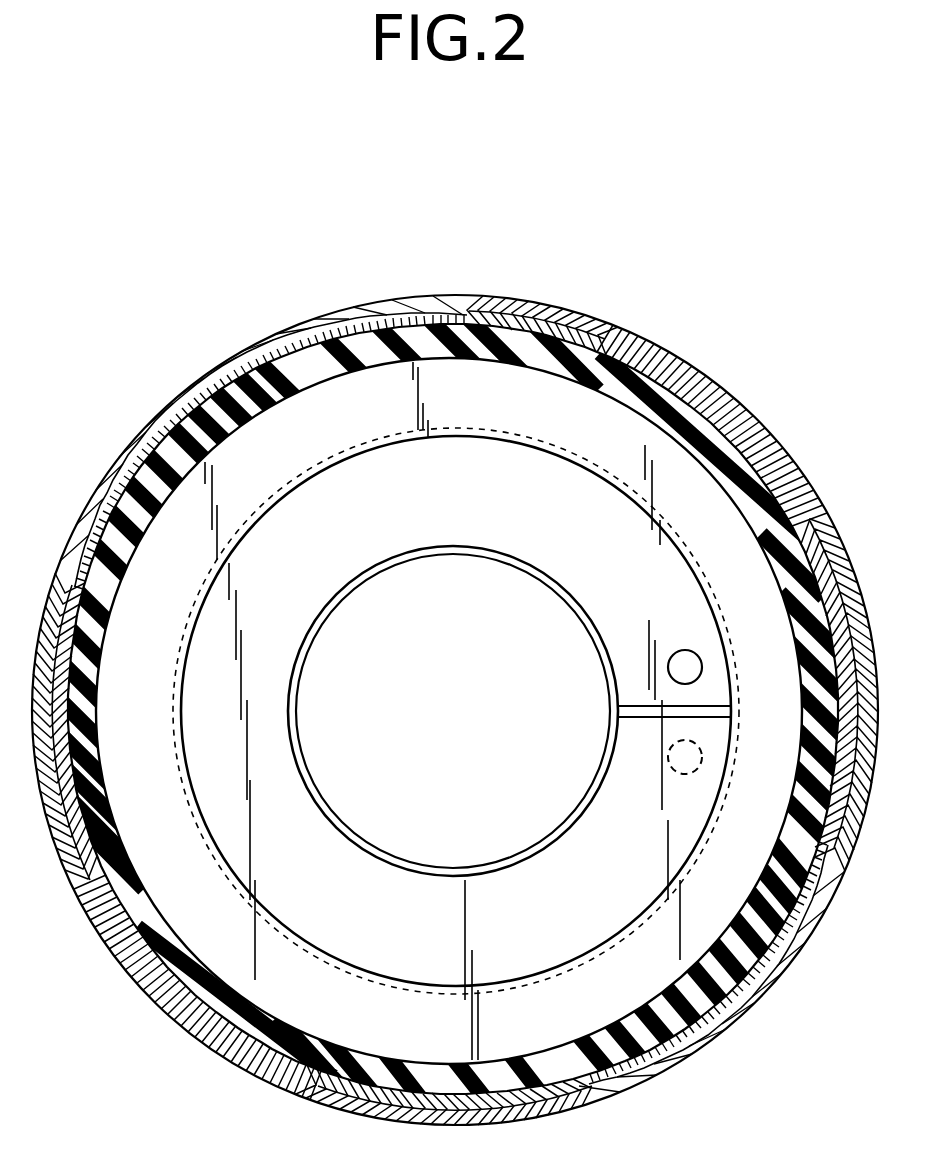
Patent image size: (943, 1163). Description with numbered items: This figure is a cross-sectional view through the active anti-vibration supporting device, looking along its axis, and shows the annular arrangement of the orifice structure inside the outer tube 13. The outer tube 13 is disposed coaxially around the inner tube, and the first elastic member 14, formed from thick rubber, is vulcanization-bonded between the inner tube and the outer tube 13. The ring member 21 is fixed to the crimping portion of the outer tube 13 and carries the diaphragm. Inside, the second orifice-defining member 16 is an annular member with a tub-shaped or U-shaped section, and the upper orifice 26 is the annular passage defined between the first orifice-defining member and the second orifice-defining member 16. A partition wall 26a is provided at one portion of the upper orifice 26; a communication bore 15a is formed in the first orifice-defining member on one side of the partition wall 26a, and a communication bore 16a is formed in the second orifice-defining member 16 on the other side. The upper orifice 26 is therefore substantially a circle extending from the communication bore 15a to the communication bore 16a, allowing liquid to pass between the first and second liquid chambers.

The outer tube 13 is at (698, 366).
The first elastic member 14 is at (467, 340).
The ring member 21 is at (240, 380).
The upper orifice 26 is at (552, 531).
The second orifice-defining member 16 is at (372, 577).
The communication bore 16a is at (669, 663).
The partition wall 26a is at (622, 730).
The communication bore 15a is at (675, 765).